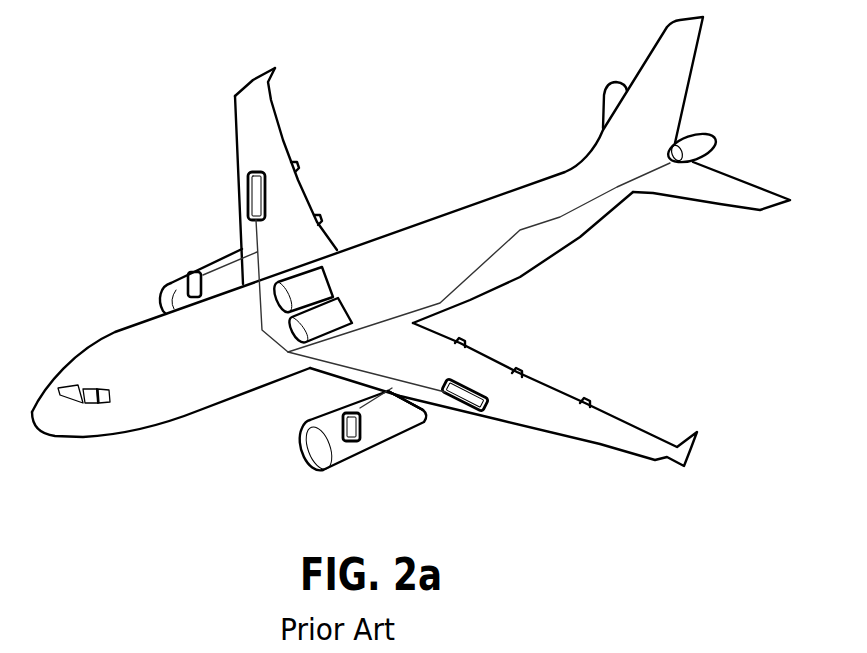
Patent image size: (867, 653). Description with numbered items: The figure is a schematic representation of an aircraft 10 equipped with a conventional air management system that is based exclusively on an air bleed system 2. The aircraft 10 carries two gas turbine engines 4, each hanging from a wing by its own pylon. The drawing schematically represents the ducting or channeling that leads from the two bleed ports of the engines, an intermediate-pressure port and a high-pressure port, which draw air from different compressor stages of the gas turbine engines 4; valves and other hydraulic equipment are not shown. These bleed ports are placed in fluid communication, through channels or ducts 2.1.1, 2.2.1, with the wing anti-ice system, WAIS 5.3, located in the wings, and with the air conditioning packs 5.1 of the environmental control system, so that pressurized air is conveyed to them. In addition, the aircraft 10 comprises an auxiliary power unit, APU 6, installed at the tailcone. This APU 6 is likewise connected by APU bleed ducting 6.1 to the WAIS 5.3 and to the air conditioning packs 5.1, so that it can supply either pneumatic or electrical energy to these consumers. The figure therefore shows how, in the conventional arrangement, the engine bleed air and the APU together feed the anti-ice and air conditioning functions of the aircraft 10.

The aircraft 10 is at (104, 278).
The air bleed system 2 is at (250, 353).
The gas turbine engine 4 is at (220, 265).
The air conditioning pack 5.1 is at (347, 307).
The WAIS 5.3 is at (257, 192).
The auxiliary power unit 6 is at (693, 137).
The APU bleed ducting 6.1 is at (528, 227).
The channel or duct 2.1.1 is at (392, 407).
The channel or duct 2.2.1 is at (392, 407).